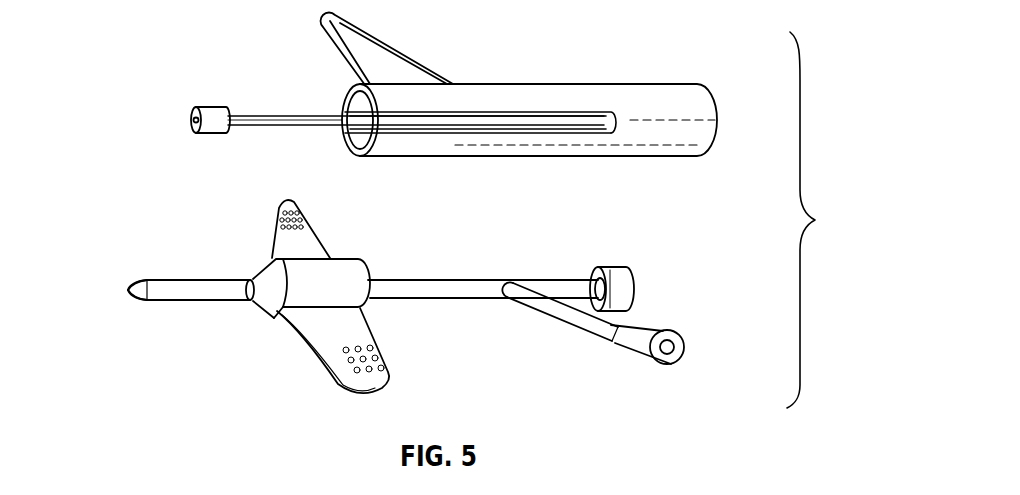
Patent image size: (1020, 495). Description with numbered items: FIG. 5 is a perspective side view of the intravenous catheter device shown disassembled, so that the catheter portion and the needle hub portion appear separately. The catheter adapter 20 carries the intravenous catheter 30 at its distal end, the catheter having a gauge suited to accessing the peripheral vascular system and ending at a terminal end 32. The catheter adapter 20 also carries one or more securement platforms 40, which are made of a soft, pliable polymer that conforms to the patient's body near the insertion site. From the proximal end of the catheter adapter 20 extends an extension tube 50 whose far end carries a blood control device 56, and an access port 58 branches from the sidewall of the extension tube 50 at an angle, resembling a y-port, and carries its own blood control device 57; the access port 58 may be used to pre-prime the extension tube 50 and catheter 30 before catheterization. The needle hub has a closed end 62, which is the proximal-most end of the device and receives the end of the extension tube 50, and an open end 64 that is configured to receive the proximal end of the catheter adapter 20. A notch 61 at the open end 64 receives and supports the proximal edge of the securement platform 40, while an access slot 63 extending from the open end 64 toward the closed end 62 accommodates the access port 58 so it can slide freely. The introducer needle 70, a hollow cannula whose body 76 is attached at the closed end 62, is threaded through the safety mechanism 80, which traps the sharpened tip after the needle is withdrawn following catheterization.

The catheter adapter 20 is at (335, 270).
The intravenous catheter 30 is at (183, 283).
The terminal end 32 is at (127, 290).
The securement platform 40 is at (283, 201).
The extension tube 50 is at (435, 300).
The blood control device 56 is at (612, 268).
The blood control device 57 is at (672, 330).
The access port 58 is at (572, 320).
The notch 61 is at (345, 97).
The closed end 62 is at (717, 112).
The access slot 63 is at (473, 133).
The open end 64 is at (338, 137).
The introducer needle 70 is at (303, 127).
The body 76 is at (517, 119).
The safety mechanism 80 is at (210, 107).